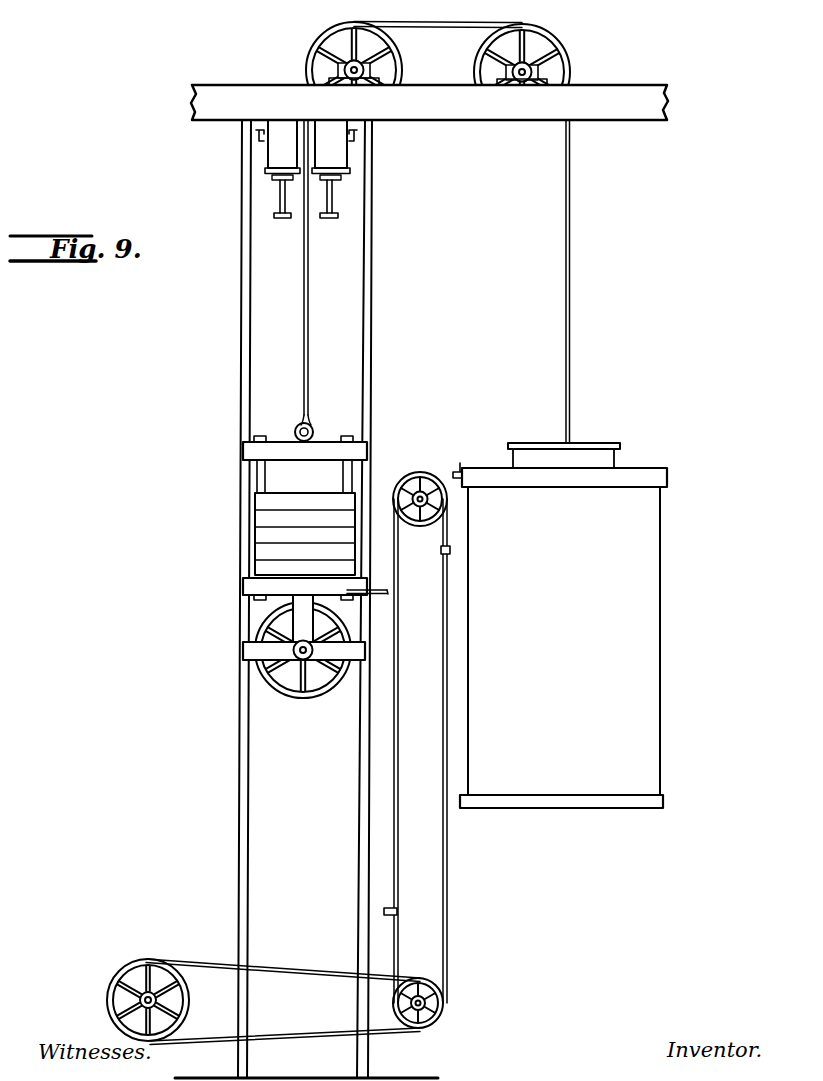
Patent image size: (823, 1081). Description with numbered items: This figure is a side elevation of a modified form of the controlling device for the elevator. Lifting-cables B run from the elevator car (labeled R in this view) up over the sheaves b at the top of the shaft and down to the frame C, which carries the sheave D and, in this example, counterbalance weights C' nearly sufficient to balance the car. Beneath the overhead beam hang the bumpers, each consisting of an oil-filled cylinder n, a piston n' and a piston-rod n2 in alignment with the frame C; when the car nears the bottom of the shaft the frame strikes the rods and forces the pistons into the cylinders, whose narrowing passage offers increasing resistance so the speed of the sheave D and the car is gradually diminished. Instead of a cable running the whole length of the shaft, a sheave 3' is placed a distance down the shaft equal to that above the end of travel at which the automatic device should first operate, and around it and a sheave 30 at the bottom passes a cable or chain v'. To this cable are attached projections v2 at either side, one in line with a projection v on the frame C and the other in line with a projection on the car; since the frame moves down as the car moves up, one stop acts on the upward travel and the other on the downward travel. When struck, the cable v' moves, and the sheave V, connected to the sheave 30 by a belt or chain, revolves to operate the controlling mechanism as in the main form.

The sheaves b is at (393, 53).
The lifting-cables B is at (309, 336).
The cylinder n is at (306, 147).
The piston-rod n2 is at (281, 188).
The piston n' is at (305, 228).
The frame C is at (305, 518).
The weights C' is at (305, 534).
The sheave D is at (307, 694).
The projections v is at (407, 517).
The sheave 3' is at (420, 486).
The cable or chain v' is at (444, 751).
The projections v2 is at (450, 548).
The car R is at (563, 625).
The sheave V is at (150, 958).
The sheave 30 is at (443, 998).